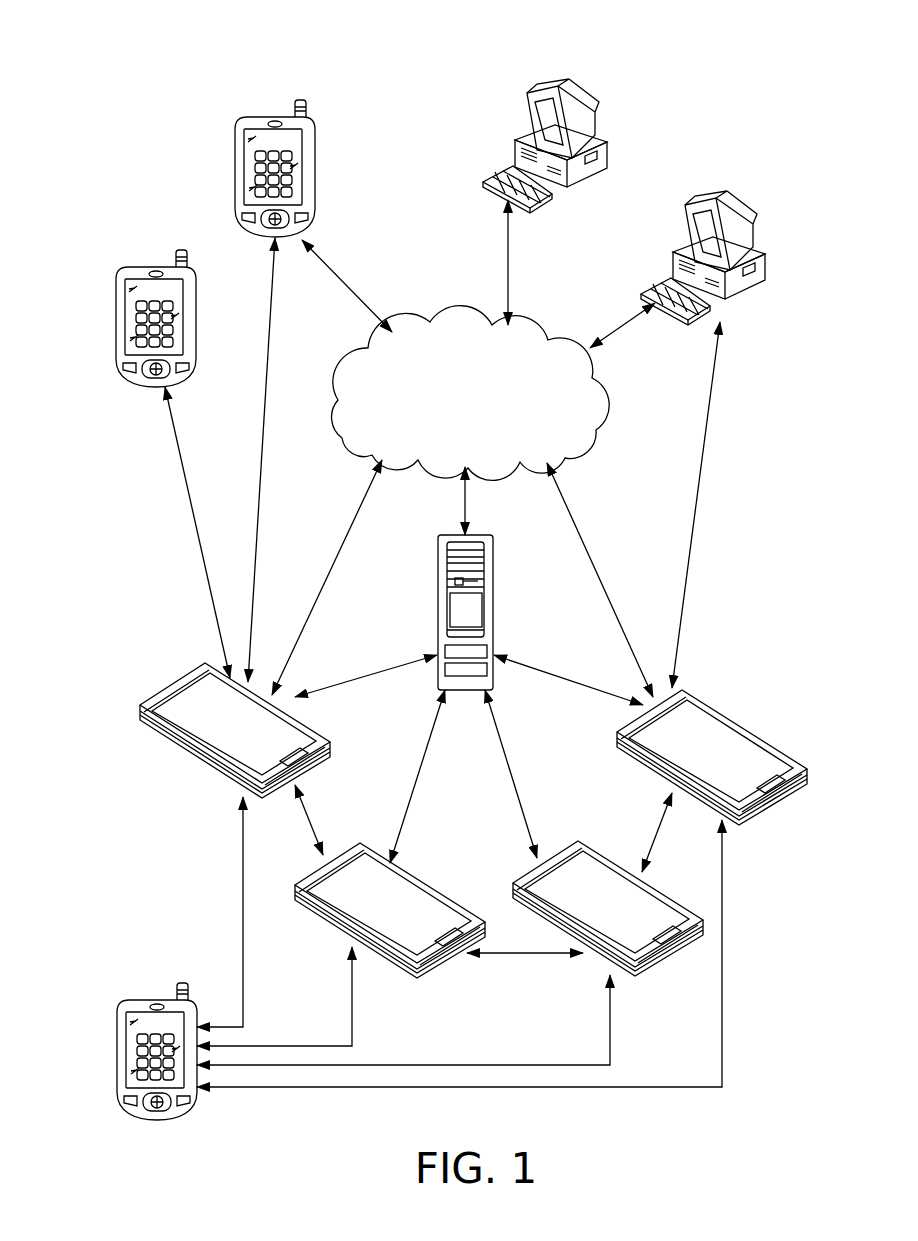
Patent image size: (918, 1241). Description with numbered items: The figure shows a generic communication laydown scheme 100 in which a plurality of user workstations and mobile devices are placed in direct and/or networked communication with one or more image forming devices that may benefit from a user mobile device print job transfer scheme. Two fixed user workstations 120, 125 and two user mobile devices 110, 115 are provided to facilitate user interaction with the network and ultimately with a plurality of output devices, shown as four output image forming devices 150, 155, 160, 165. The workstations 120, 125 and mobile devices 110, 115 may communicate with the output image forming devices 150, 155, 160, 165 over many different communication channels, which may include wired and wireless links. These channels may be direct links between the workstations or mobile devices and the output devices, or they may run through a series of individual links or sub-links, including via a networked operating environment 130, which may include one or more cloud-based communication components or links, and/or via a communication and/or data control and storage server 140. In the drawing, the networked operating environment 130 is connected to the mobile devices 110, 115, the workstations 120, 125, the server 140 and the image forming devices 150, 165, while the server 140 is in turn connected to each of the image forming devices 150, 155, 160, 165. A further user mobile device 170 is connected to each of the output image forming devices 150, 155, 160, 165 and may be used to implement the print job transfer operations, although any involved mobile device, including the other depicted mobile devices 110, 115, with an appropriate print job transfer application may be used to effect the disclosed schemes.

The generic communication laydown scheme 100 is at (425, 78).
The user mobile device 110 is at (150, 267).
The user mobile device 115 is at (274, 117).
The fixed user workstation 120 is at (598, 113).
The fixed user workstation 125 is at (752, 225).
The networked operating environment 130 is at (445, 315).
The communication and/or data control and storage server 140 is at (437, 603).
The output image forming device 150 is at (186, 755).
The output image forming device 155 is at (322, 930).
The output image forming device 160 is at (665, 960).
The output image forming device 165 is at (775, 805).
The user mobile device 170 is at (143, 1000).